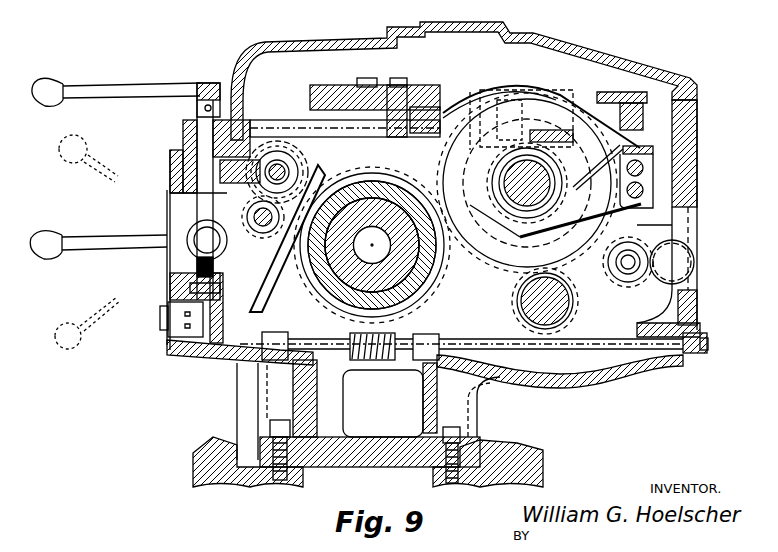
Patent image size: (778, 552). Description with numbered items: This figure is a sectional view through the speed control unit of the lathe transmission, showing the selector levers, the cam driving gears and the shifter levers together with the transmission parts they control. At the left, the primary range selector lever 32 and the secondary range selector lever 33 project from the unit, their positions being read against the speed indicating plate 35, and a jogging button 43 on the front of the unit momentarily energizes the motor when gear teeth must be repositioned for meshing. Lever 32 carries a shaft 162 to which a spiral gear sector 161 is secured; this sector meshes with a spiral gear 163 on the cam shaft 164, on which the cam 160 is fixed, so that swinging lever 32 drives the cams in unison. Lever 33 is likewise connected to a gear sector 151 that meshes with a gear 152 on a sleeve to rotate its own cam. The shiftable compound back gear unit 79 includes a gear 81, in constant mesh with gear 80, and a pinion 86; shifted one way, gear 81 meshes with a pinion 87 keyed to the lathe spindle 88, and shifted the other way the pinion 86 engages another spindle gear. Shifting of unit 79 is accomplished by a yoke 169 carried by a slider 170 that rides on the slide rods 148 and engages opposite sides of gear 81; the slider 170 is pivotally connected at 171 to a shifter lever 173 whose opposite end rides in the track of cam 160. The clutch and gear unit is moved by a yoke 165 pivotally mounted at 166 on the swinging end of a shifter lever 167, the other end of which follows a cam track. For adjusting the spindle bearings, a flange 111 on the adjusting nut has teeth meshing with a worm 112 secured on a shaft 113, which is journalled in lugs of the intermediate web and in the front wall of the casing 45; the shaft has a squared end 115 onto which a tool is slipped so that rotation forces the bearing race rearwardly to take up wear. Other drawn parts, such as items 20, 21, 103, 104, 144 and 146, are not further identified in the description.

The housing wall 20 is at (697, 162).
The base foundation 21 is at (205, 437).
The primary range selector lever 32 is at (125, 92).
The secondary range selector lever 33 is at (95, 238).
The speed indicating plate 35 is at (167, 288).
The jogging button 43 is at (160, 320).
The casing 45 is at (306, 47).
The shiftable compound back gear unit 79 is at (450, 172).
The gear 80 is at (570, 305).
The gear 81 is at (576, 280).
The pinion 86 is at (520, 224).
The pinion 87 is at (430, 272).
The lathe spindle 88 is at (420, 262).
The pinion 103 is at (640, 278).
The roller 104 is at (694, 245).
The flange 111 is at (436, 280).
The worm 112 is at (372, 362).
The shaft 113 is at (478, 339).
The squared end 115 is at (707, 340).
The bearing 144 is at (266, 335).
The nut 146 is at (708, 348).
The slide rods 148 is at (643, 170).
The gear sector 151 is at (187, 205).
The gear 152 is at (287, 262).
The cam 160 is at (262, 140).
The spiral gear sector 161 is at (180, 170).
The shaft 162 is at (205, 140).
The spiral gear 163 is at (305, 128).
The cam shaft 164 is at (290, 162).
The yoke 165 is at (560, 124).
The pivot 166 is at (556, 92).
The shifter lever 167 is at (513, 92).
The yoke 169 is at (615, 212).
The slider 170 is at (643, 192).
The pivot 171 is at (653, 152).
The shifter lever 173 is at (471, 92).